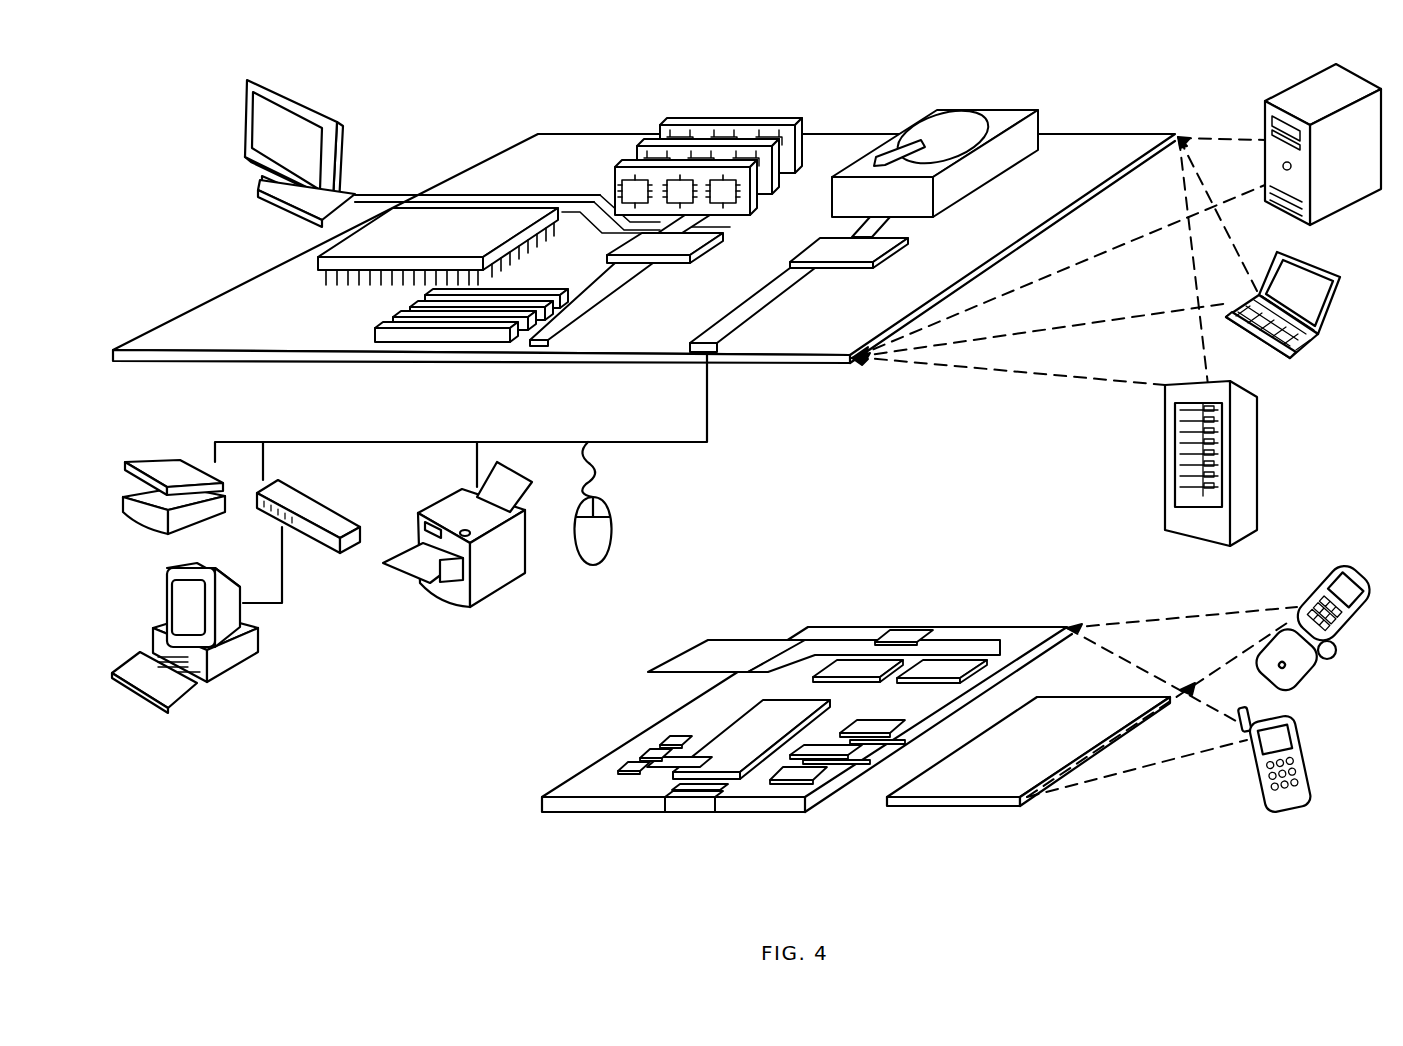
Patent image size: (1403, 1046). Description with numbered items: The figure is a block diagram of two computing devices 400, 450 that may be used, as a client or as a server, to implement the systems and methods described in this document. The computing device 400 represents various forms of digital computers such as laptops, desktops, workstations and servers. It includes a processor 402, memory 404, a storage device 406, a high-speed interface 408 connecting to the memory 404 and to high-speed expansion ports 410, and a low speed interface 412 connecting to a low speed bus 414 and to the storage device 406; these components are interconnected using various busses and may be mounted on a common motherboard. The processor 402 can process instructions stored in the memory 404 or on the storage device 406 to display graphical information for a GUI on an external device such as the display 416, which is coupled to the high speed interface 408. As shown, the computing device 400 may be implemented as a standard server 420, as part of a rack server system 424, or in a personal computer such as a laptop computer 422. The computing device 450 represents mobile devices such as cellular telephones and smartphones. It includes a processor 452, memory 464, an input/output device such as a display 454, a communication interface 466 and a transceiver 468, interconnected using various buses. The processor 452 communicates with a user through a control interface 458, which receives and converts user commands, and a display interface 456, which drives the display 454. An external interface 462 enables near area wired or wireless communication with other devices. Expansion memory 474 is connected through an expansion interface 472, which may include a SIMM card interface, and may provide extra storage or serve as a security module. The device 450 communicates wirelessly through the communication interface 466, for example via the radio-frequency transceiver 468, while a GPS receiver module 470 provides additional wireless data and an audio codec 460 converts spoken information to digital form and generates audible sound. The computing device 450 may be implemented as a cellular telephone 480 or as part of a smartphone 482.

The computing device 400 is at (456, 102).
The processor 402 is at (318, 260).
The memory 404 is at (672, 125).
The storage device 406 is at (924, 114).
The high-speed interface 408 is at (640, 244).
The high-speed expansion ports 410 is at (398, 328).
The low speed interface 412 is at (830, 246).
The low speed bus 414 is at (728, 360).
The display 416 is at (242, 82).
The standard server 420 is at (1262, 110).
The laptop computer 422 is at (1328, 274).
The rack server system 424 is at (1166, 480).
The computing device 450 is at (512, 820).
The processor 452 is at (734, 761).
The display 454 is at (986, 783).
The display interface 456 is at (808, 780).
The control interface 458 is at (843, 748).
The audio codec 460 is at (868, 728).
The external interface 462 is at (698, 792).
The memory 464 is at (630, 759).
The communication interface 466 is at (854, 664).
The transceiver 468 is at (942, 664).
The GPS receiver module 470 is at (908, 629).
The expansion interface 472 is at (780, 640).
The expansion memory 474 is at (702, 638).
The cellular telephone 480 is at (1290, 581).
The smartphone 482 is at (1254, 770).